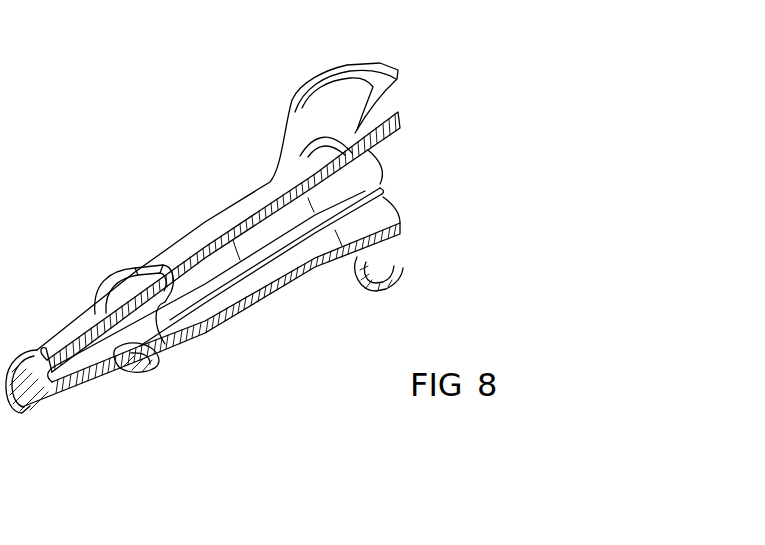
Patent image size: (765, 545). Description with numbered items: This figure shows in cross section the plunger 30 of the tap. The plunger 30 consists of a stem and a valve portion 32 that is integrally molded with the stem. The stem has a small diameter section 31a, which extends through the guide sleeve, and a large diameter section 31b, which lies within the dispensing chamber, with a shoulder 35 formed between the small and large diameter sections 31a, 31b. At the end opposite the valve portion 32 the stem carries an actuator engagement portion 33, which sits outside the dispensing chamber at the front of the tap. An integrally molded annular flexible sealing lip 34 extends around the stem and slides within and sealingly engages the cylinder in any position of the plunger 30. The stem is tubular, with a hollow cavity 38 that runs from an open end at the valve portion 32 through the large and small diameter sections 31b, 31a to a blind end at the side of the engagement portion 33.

The plunger 30 is at (409, 206).
The small diameter section 31a is at (85, 375).
The large diameter section 31b is at (250, 306).
The valve portion 32 is at (415, 80).
The actuator engagement portion 33 is at (25, 392).
The annular flexible sealing lip 34 is at (150, 372).
The shoulder 35 is at (152, 292).
The hollow cavity 38 is at (288, 222).